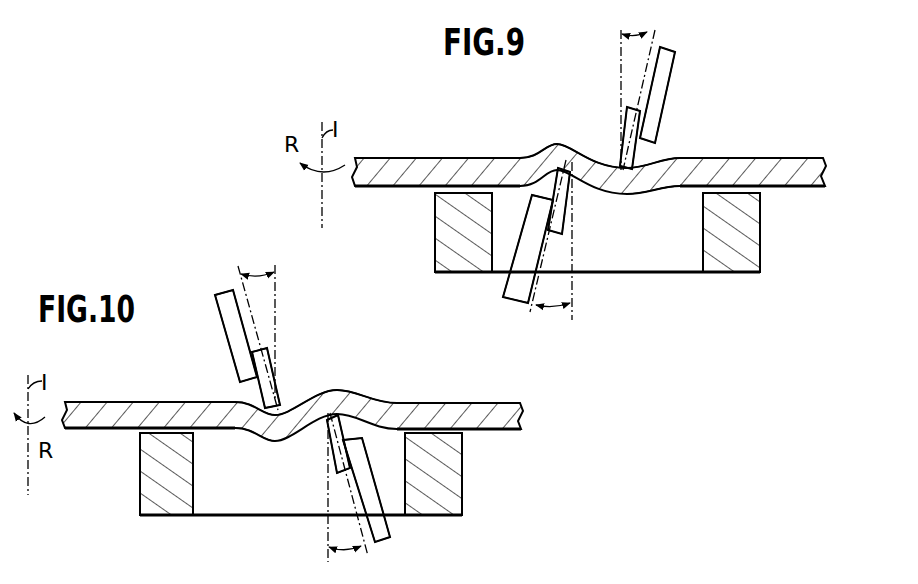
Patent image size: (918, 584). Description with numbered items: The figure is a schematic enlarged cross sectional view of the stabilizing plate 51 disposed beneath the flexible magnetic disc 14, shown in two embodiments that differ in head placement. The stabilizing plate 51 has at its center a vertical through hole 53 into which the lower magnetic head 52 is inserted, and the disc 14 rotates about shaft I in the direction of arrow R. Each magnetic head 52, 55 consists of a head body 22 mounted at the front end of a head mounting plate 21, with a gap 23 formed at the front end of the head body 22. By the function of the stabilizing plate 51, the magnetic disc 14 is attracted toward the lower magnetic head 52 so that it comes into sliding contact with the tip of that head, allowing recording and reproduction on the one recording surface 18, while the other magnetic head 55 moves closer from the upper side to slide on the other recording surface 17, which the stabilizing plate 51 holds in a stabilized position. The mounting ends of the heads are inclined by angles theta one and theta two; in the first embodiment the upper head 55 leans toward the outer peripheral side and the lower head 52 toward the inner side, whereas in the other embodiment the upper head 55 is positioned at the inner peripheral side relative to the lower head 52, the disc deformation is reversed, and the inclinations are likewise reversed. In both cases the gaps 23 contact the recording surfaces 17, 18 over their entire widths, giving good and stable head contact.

In FIG. 9, the magnetic disc 14 is at (779, 168).
In FIG. 10, the magnetic disc 14 is at (500, 428).
In FIG. 9, the recording surface 17 is at (425, 158).
In FIG. 10, the recording surface 17 is at (447, 402).
In FIG. 9, the recording surface 18 is at (678, 197).
In FIG. 10, the recording surface 18 is at (118, 432).
In FIG. 9, the head mounting plate 21 is at (659, 113).
In FIG. 10, the head mounting plate 21 is at (230, 326).
In FIG. 9, the head body 22 is at (638, 151).
In FIG. 10, the head body 22 is at (270, 370).
In FIG. 9, the gap 23 is at (579, 150).
In FIG. 10, the gap 23 is at (322, 395).
In FIG. 9, the stabilizing plate 51 is at (768, 230).
In FIG. 10, the stabilizing plate 51 is at (475, 476).
In FIG. 9, the magnetic head 52 is at (498, 284).
In FIG. 10, the magnetic head 52 is at (395, 549).
In FIG. 9, the through hole 53 is at (693, 256).
In FIG. 10, the through hole 53 is at (217, 495).
In FIG. 9, the magnetic head 55 is at (691, 62).
In FIG. 10, the magnetic head 55 is at (210, 292).